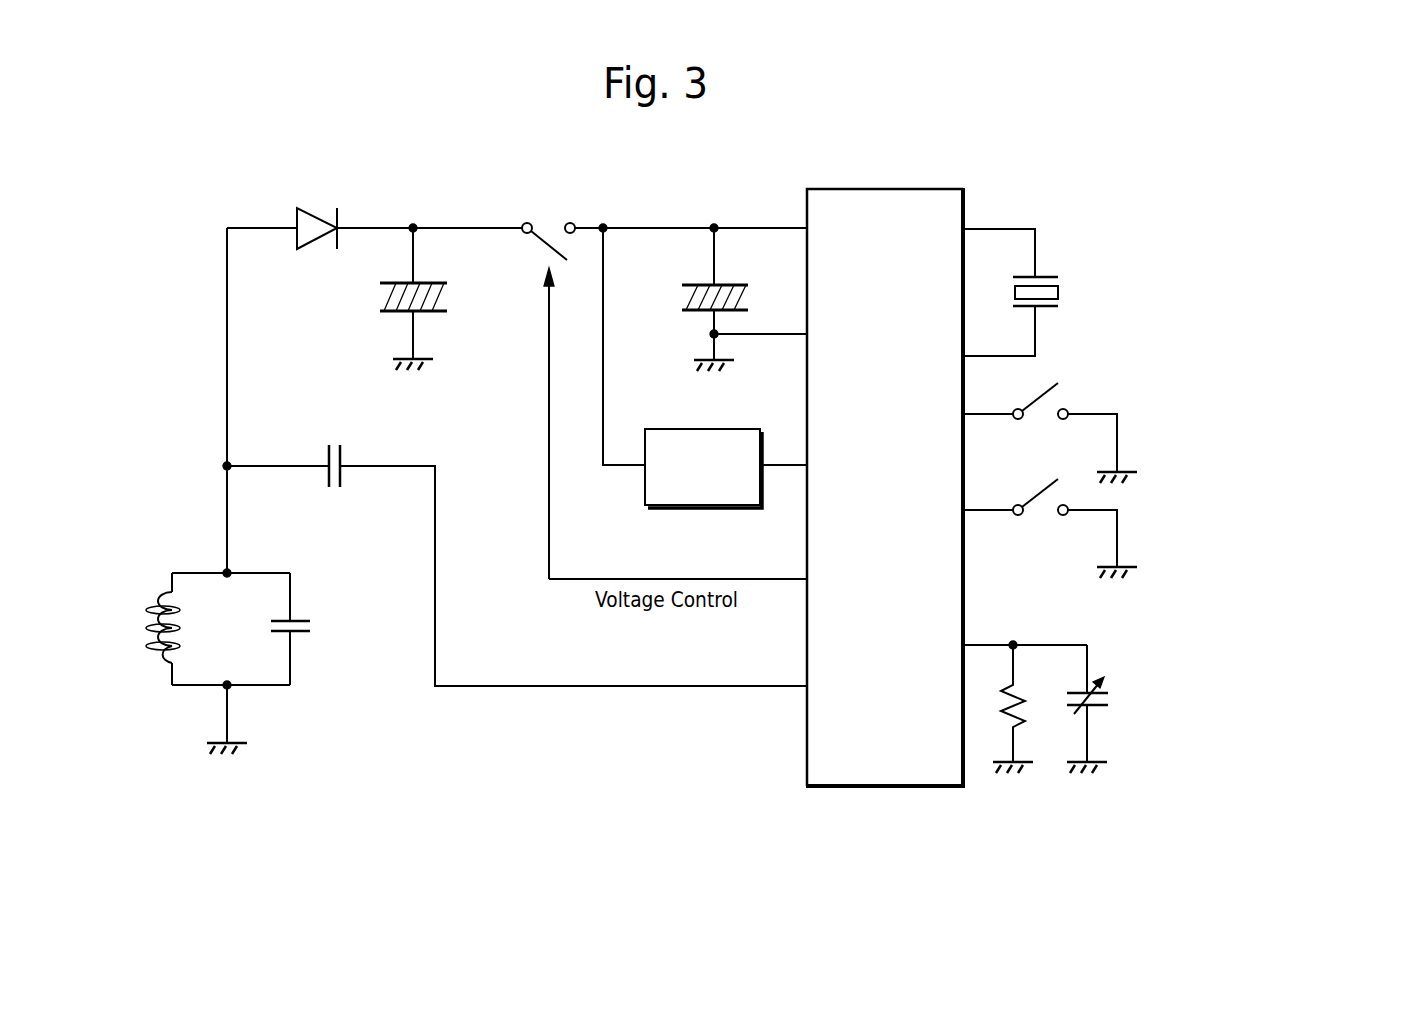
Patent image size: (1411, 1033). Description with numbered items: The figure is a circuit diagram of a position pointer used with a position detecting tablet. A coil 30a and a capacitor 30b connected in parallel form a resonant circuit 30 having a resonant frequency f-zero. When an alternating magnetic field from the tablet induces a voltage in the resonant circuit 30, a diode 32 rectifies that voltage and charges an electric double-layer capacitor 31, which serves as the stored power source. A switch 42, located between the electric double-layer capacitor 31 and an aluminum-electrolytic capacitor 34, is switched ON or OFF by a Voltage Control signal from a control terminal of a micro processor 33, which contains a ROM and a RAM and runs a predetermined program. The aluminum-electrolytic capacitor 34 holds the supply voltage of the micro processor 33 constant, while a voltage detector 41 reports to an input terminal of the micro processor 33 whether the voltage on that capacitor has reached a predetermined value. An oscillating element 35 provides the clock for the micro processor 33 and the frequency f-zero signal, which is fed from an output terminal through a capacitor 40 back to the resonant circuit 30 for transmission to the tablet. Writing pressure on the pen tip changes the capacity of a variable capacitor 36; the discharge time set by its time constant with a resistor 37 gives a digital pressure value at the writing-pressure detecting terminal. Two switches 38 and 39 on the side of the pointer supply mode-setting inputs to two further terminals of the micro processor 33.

The resonant circuit 30 is at (235, 661).
The coil 30a is at (143, 642).
The capacitor 30b is at (313, 626).
The electric double-layer capacitor 31 is at (380, 300).
The diode 32 is at (328, 207).
The micro processor 33 is at (886, 189).
The aluminum-electrolytic capacitor 34 is at (682, 301).
The oscillating element 35 is at (1062, 291).
The variable capacitor 36 is at (1100, 706).
The resistor 37 is at (1030, 683).
The switch 38 is at (1066, 398).
The switch 39 is at (1118, 494).
The capacitor 40 is at (328, 481).
The voltage detector 41 is at (645, 493).
The switch 42 is at (548, 216).